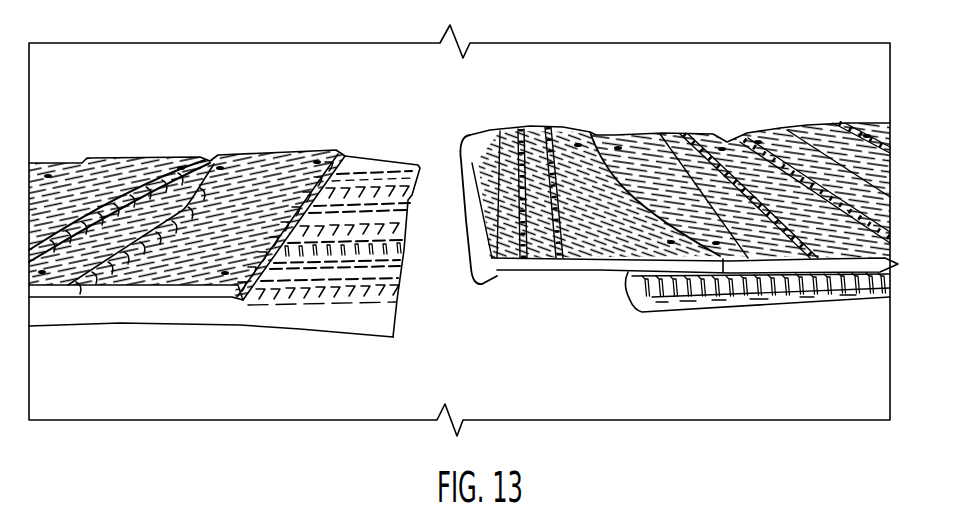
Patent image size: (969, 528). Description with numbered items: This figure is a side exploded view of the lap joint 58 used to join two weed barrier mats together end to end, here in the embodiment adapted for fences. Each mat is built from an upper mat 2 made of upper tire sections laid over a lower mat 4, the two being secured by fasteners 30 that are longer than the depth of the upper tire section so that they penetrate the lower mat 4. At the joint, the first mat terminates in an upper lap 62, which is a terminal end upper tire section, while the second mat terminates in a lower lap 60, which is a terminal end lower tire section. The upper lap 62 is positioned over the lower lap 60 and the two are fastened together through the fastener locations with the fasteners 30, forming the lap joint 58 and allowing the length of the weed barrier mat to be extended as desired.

The upper mat 2 is at (727, 190).
The lower mat 4 is at (693, 286).
The fasteners 30 is at (320, 160).
The lap joint 58 is at (432, 337).
The lower lap 60 is at (310, 289).
The upper lap 62 is at (522, 227).